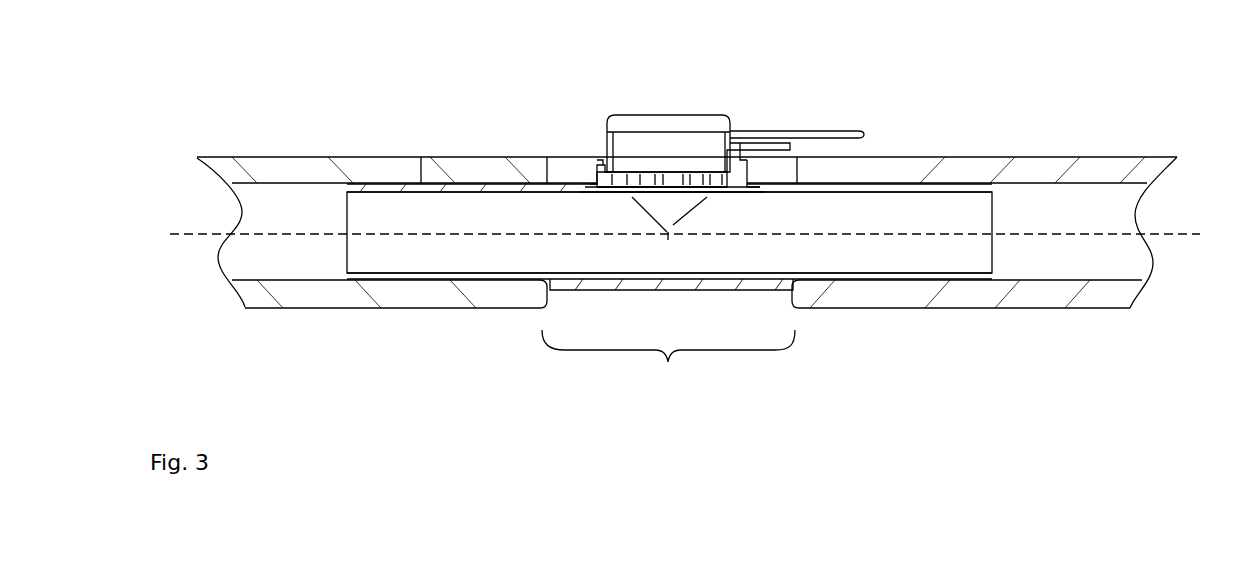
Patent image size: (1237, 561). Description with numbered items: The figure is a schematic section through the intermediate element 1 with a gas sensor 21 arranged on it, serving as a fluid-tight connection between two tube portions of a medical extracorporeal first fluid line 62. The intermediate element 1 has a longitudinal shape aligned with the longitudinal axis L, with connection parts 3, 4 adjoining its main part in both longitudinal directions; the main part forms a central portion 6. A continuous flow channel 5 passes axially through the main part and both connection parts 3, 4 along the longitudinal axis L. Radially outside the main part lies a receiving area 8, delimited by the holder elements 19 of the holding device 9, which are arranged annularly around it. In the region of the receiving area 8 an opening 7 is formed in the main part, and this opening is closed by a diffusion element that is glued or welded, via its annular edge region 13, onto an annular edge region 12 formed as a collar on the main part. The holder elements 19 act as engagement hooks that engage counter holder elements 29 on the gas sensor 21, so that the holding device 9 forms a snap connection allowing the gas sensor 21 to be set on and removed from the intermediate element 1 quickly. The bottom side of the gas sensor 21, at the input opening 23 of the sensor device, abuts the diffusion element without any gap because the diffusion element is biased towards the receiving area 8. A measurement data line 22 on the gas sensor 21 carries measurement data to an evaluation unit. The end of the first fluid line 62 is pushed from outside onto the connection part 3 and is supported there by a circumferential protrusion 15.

The intermediate element 1 is at (556, 113).
The connection part 3 is at (487, 283).
The connection part 4 is at (862, 280).
The flow channel 5 is at (378, 261).
The central portion 6 is at (668, 362).
The opening 7 is at (680, 200).
The receiving area 8 is at (742, 153).
The holding device 9 is at (585, 158).
The edge region 12 is at (712, 190).
The edge region 13 is at (748, 182).
The protrusion 15 is at (905, 183).
The holder elements 19 is at (597, 178).
The gas sensor 21 is at (705, 113).
The measurement data line 22 is at (862, 130).
The input opening 23 is at (667, 233).
The counter holder element 29 is at (612, 172).
The first fluid line 62 is at (1000, 157).
The longitudinal axis L is at (170, 233).